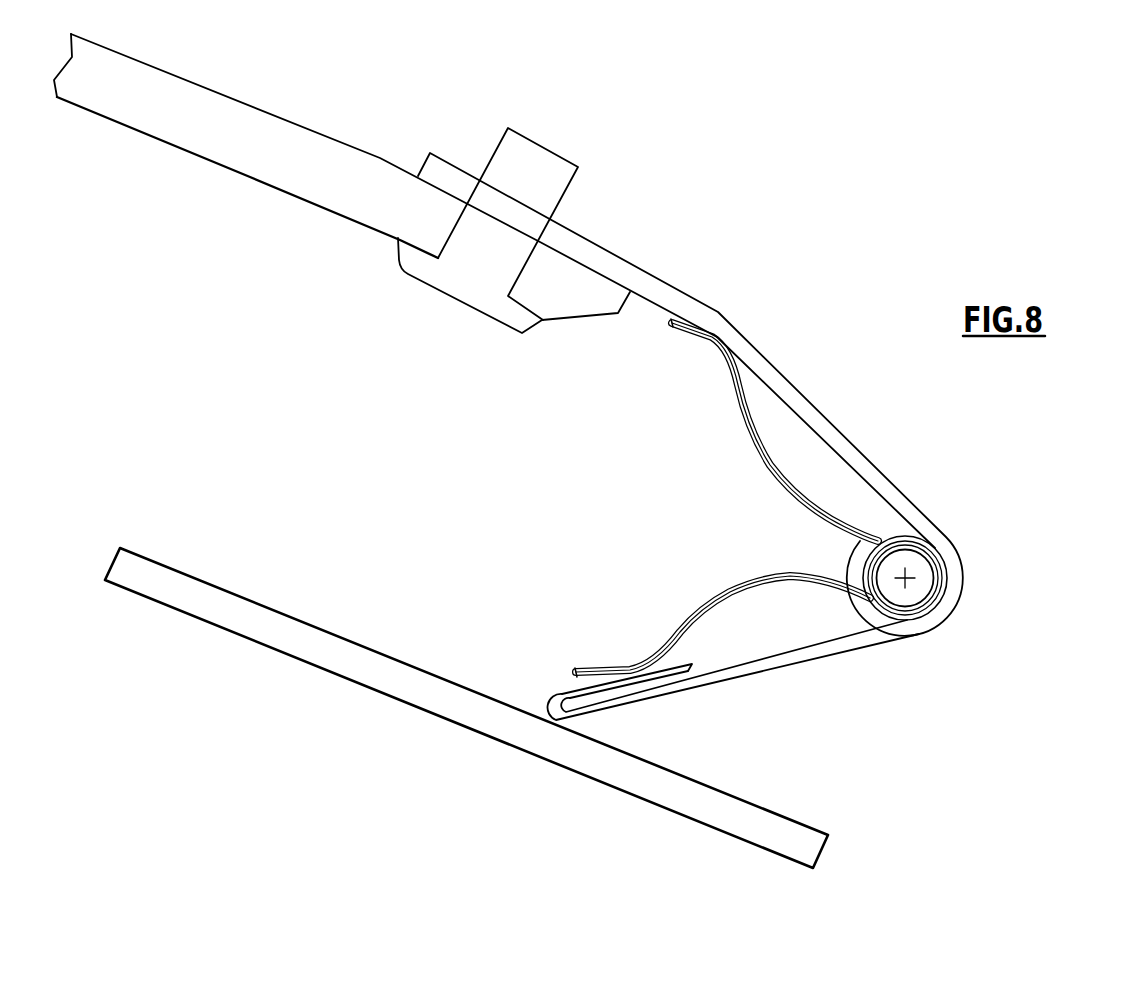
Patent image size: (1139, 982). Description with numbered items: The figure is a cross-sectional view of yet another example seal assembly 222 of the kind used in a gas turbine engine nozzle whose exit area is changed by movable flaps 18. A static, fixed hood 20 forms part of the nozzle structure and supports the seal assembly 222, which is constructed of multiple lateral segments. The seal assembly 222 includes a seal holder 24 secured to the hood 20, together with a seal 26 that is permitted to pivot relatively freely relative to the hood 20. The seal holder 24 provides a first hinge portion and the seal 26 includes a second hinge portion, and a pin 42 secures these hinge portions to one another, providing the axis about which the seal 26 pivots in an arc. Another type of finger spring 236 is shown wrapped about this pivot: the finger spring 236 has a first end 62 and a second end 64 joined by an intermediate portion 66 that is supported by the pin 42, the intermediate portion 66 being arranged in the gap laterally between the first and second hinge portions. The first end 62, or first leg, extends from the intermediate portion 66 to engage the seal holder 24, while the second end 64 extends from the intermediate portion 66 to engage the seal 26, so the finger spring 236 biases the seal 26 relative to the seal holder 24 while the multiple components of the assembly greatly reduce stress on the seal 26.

The movable flap 18 is at (710, 800).
The hood 20 is at (243, 133).
The seal holder 24 is at (800, 404).
The seal 26 is at (805, 650).
The pin 42 is at (915, 583).
The first end 62 is at (710, 335).
The second end 64 is at (592, 672).
The intermediate portion 66 is at (912, 538).
The seal assembly 222 is at (1040, 620).
The finger spring 236 is at (845, 516).